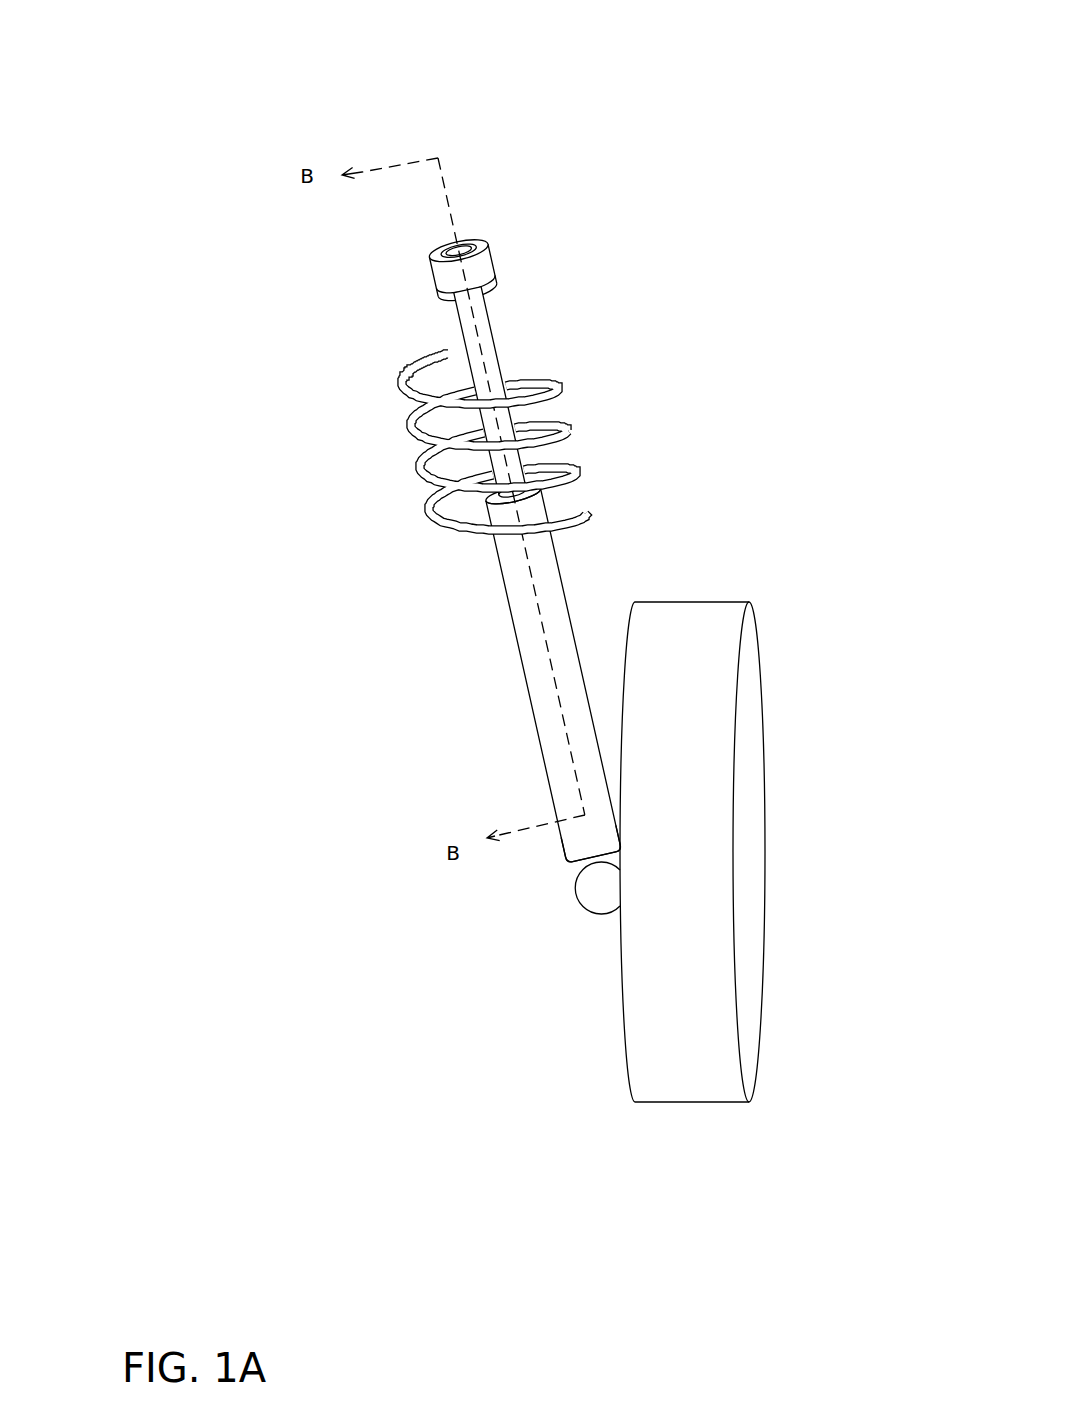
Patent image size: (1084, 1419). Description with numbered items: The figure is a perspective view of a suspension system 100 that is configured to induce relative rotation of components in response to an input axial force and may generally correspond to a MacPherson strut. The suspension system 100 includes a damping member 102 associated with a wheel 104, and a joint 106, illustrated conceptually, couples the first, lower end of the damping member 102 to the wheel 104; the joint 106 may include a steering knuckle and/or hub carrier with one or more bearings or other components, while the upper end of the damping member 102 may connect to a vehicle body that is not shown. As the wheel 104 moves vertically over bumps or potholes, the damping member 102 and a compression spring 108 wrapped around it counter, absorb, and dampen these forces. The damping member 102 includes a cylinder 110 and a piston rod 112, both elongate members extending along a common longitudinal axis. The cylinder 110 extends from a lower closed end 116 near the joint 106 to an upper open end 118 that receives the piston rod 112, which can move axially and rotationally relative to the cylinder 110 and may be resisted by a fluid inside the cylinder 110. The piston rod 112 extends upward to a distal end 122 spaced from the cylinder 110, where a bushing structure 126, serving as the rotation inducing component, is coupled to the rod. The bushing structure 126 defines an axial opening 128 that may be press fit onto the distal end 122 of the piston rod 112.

The suspension system 100 is at (602, 558).
The damping member 102 is at (519, 507).
The wheel 104 is at (685, 855).
The joint 106 is at (613, 905).
The compression spring 108 is at (563, 470).
The cylinder 110 is at (552, 672).
The piston rod 112 is at (490, 391).
The lower closed end 116 is at (591, 844).
The upper open end 118 is at (513, 494).
The distal end 122 is at (511, 486).
The bushing structure 126 is at (510, 222).
The axial opening 128 is at (462, 270).